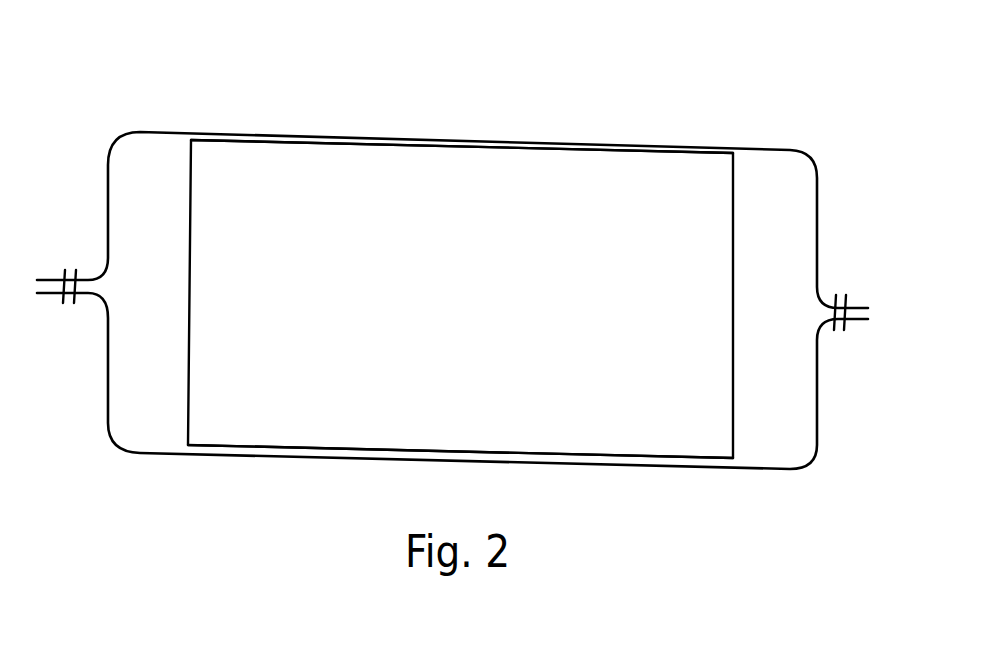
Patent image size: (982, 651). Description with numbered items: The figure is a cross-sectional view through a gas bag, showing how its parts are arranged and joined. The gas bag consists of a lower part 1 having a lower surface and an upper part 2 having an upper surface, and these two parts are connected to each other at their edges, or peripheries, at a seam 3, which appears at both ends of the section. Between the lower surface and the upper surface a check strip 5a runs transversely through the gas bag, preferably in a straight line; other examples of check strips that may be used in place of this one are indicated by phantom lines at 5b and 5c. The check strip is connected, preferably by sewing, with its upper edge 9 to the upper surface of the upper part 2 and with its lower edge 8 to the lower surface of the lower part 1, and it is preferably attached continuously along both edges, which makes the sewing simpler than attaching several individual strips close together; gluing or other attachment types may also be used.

The lower part 1 is at (452, 279).
The upper part 2 is at (163, 132).
The seam 3 is at (78, 272).
The check strip 5a is at (460, 234).
The check strip 5b is at (460, 234).
The check strip 5c is at (480, 180).
The lower edge 8 is at (347, 452).
The upper edge 9 is at (343, 140).